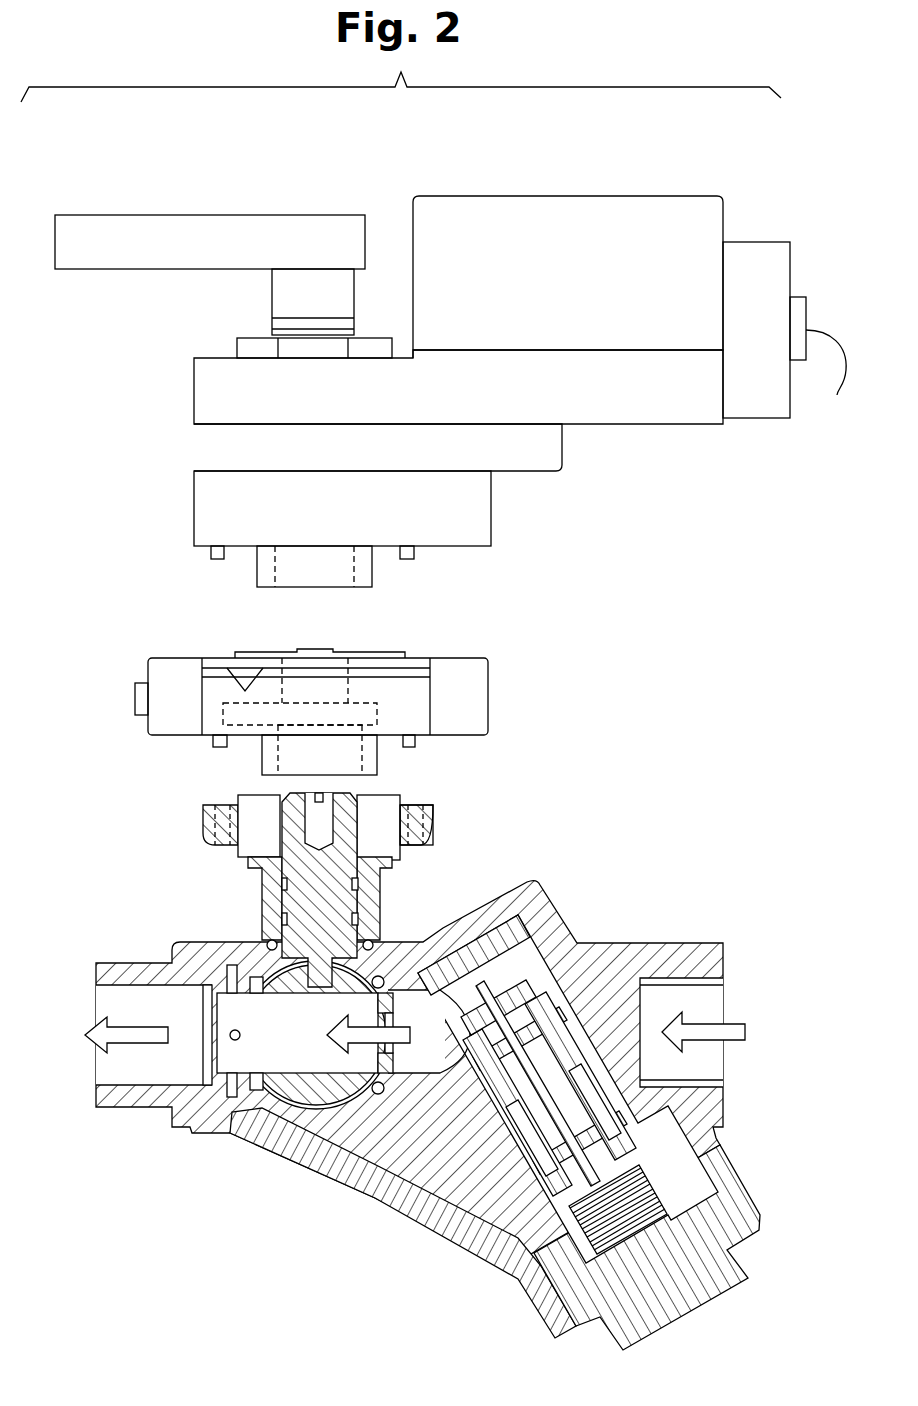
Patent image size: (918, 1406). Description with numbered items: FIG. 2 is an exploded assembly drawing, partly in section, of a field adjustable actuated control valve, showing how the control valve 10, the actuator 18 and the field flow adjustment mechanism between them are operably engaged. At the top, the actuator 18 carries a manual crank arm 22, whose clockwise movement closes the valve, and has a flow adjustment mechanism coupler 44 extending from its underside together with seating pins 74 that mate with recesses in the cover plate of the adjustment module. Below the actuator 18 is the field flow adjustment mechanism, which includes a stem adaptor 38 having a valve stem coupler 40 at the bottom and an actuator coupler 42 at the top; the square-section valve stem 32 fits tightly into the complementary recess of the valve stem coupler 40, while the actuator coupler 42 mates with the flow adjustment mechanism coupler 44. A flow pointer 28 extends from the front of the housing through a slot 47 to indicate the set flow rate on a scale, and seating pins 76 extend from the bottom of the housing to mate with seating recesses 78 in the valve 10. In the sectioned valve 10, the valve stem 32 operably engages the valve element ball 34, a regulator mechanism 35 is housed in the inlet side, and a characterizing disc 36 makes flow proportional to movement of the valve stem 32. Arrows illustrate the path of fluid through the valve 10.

The control valve 10 is at (440, 1071).
The actuator 18 is at (450, 395).
The manual crank arm 22 is at (298, 235).
The pointer 28 is at (317, 690).
The valve stem 32 is at (293, 832).
The valve element ball 34 is at (302, 1080).
The regulator mechanism 35 is at (650, 1037).
The characterizing disc 36 is at (412, 1065).
The stem adaptor 38 is at (327, 704).
The valve stem coupler 40 is at (342, 760).
The actuator coupler 42 is at (318, 650).
The flow adjustment mechanism coupler 44 is at (309, 573).
The slot 47 is at (425, 668).
The seating pins 74 is at (409, 560).
The seating pins 76 is at (412, 748).
The seating recesses 78 is at (432, 800).